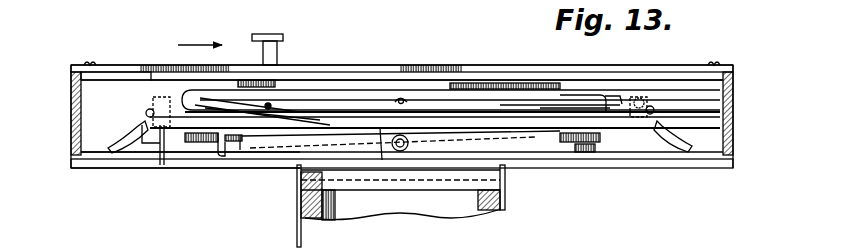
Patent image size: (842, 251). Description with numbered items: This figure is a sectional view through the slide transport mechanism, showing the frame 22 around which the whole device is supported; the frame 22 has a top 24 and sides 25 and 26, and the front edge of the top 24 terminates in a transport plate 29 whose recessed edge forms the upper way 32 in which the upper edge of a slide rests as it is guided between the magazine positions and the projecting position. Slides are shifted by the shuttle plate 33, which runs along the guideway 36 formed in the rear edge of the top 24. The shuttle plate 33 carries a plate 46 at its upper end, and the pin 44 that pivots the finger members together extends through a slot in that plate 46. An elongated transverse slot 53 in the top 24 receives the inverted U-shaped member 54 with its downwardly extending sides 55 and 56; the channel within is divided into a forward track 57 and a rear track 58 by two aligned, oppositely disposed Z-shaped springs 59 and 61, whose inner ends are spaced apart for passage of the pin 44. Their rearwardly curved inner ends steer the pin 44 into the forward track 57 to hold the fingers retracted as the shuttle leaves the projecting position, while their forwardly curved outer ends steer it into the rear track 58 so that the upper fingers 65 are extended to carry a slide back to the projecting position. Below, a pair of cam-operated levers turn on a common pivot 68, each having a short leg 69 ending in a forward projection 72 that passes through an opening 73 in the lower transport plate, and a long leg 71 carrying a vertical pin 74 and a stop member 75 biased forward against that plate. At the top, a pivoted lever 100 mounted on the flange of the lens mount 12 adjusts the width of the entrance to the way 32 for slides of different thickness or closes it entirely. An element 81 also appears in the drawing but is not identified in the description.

The lens mount 12 is at (496, 212).
The frame 22 is at (64, 103).
The top 24 is at (710, 97).
The side 25 is at (734, 120).
The side 26 is at (71, 123).
The transport plate 29 is at (100, 156).
The way 32 is at (128, 163).
The shuttle plate 33 is at (148, 74).
The guideway 36 is at (118, 72).
The pin 44 is at (270, 103).
The plate 46 is at (344, 86).
The slot 53 is at (500, 90).
The inverted U-shaped member 54 is at (620, 95).
The side 55 is at (585, 110).
The side 56 is at (600, 98).
The forward track 57 is at (558, 112).
The rear track 58 is at (376, 112).
The Z-shaped spring 59 is at (322, 108).
The Z-shaped spring 61 is at (458, 106).
The finger 65 is at (163, 150).
The pivot 68 is at (409, 149).
The short leg 69 is at (290, 139).
The long leg 71 is at (197, 143).
The projection 72 is at (237, 151).
The opening 73 is at (222, 160).
The vertical pin 74 is at (146, 112).
The stop member 75 is at (116, 142).
The handle 81 is at (246, 47).
The lever 100 is at (298, 214).